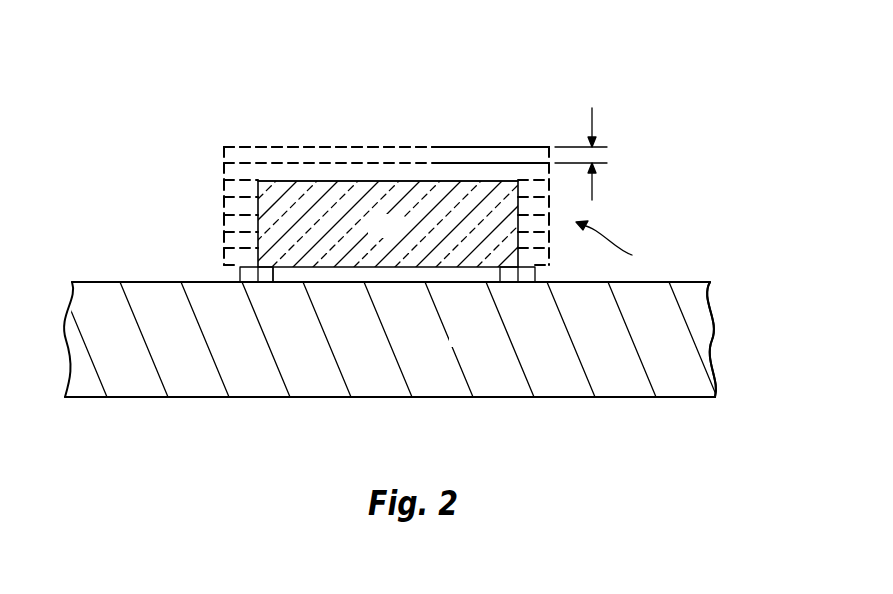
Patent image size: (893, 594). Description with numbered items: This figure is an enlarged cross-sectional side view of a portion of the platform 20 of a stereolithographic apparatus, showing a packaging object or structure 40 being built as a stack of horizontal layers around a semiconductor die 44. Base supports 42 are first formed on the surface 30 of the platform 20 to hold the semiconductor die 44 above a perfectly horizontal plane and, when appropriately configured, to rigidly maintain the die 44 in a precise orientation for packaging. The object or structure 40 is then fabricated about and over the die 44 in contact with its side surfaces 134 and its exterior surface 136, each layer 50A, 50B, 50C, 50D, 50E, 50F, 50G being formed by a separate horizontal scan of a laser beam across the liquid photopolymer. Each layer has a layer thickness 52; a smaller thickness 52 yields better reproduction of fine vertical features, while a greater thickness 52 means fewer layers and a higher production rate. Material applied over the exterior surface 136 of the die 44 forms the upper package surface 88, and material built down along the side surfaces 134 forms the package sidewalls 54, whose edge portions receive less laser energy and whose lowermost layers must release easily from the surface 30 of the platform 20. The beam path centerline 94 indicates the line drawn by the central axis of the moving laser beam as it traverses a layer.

The platform 20 is at (452, 344).
The surface of platform 30 is at (698, 282).
The object or structure 40 is at (315, 176).
The base supports 42 is at (247, 273).
The semiconductor die 44 is at (371, 236).
The layer 50A is at (342, 247).
The layer 50B is at (225, 238).
The layer 50C is at (225, 223).
The layer 50D is at (225, 207).
The layer 50E is at (225, 187).
The layer 50F is at (225, 168).
The layer 50G is at (225, 150).
The layer thickness 52 is at (592, 120).
The sidewalls 54 is at (618, 244).
The upper package surface 88 is at (277, 147).
The beam path centerline 94 is at (470, 170).
The side surfaces of die 134 is at (276, 270).
The exterior surface of die 136 is at (369, 181).